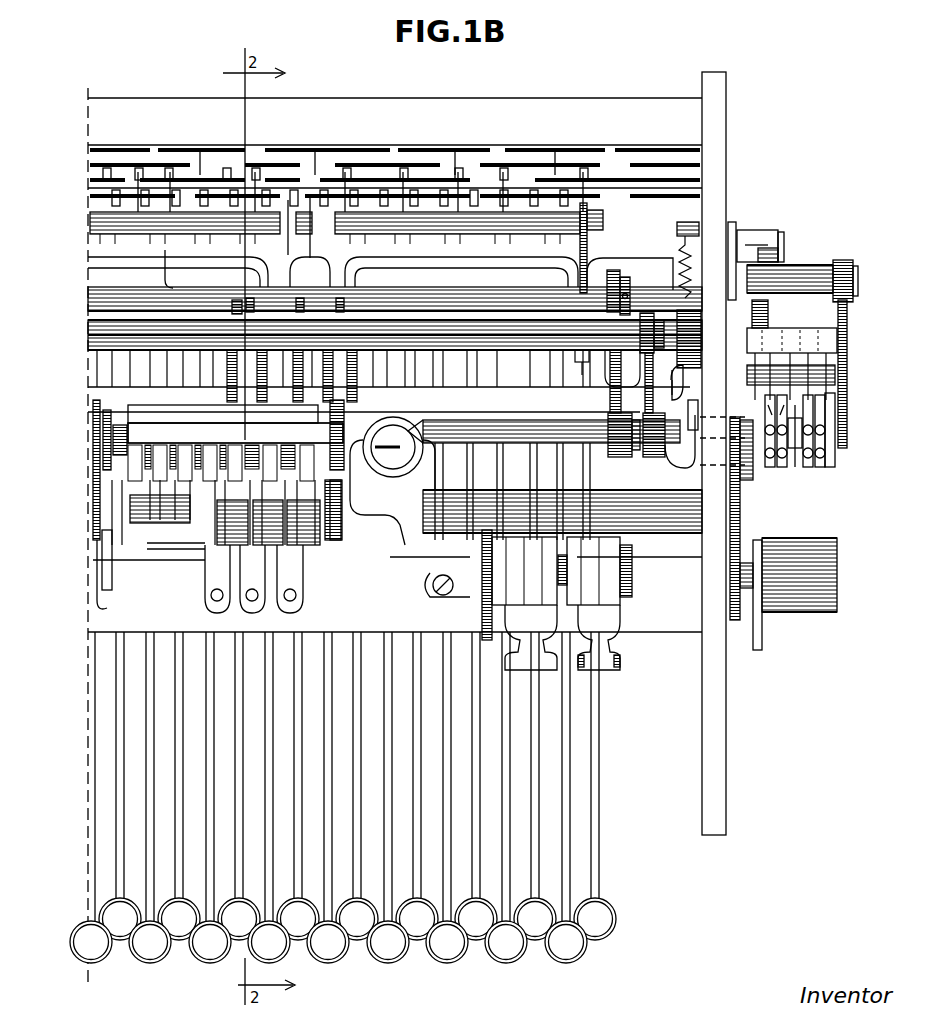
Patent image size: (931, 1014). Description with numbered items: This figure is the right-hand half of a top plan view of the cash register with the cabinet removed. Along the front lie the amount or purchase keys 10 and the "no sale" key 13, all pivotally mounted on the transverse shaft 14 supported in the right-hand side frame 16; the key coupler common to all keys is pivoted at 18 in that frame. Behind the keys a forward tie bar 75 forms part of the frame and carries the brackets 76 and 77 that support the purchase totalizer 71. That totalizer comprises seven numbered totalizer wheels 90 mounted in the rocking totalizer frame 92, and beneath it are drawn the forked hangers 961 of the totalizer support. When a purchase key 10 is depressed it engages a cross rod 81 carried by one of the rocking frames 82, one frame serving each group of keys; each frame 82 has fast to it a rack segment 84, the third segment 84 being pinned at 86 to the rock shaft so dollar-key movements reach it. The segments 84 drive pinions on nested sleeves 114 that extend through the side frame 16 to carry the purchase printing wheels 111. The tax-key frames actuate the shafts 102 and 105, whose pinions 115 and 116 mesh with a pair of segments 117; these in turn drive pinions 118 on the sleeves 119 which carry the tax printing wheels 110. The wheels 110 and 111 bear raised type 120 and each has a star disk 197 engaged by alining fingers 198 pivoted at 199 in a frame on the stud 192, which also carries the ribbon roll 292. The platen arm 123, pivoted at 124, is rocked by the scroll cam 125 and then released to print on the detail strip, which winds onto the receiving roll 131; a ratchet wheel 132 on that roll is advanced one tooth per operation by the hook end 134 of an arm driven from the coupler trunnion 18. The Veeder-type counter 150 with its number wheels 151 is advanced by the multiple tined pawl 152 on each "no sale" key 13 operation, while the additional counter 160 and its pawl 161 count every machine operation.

The cross rod 81 is at (186, 230).
The rocking frame 82 is at (165, 254).
The rack segment 84 is at (258, 310).
The pin 86 is at (245, 310).
The shaft 102 is at (481, 300).
The shaft 105 is at (493, 340).
The pinion 115 is at (610, 275).
The pinion 116 is at (640, 308).
The scroll cam 125 is at (733, 224).
The platen arm 123 is at (755, 243).
The pivot 124 is at (781, 234).
The roll 292 is at (796, 266).
The stud 192 is at (846, 270).
The alining fingers 198 is at (790, 330).
The pivot 199 is at (800, 340).
The segments 117 is at (654, 397).
The pinions 118 is at (620, 452).
The sleeves 119 is at (668, 432).
The nested sleeves 114 is at (575, 441).
The pivot (trunnion) of the key coupler 18 is at (675, 458).
The printing wheels 110 is at (778, 470).
The printing wheels 111 is at (816, 468).
The type 120 is at (798, 466).
The star disk 197 is at (829, 470).
The totalizer elements (wheels) 90 is at (272, 472).
The purchase totalizer 71 is at (233, 483).
The rocking totalizer frame 92 is at (333, 535).
The bracket 77 is at (410, 540).
The bracket 76 is at (97, 565).
The fork 961 is at (288, 582).
The step-by-step counter 160 is at (482, 606).
The multiple tined pawl 161 is at (521, 632).
The step-by-step counter 150 is at (626, 590).
The number wheels 151 is at (590, 606).
The multiple tined pawl 152 is at (607, 666).
The tie bar 75 is at (662, 632).
The transverse shaft 14 is at (666, 524).
The ratchet wheel 132 is at (750, 612).
The hook end 134 is at (760, 622).
The receiving roll 131 is at (807, 614).
The side frame 16 is at (727, 749).
The no sale key 13 is at (600, 935).
The amount or purchase keys 10 is at (373, 962).